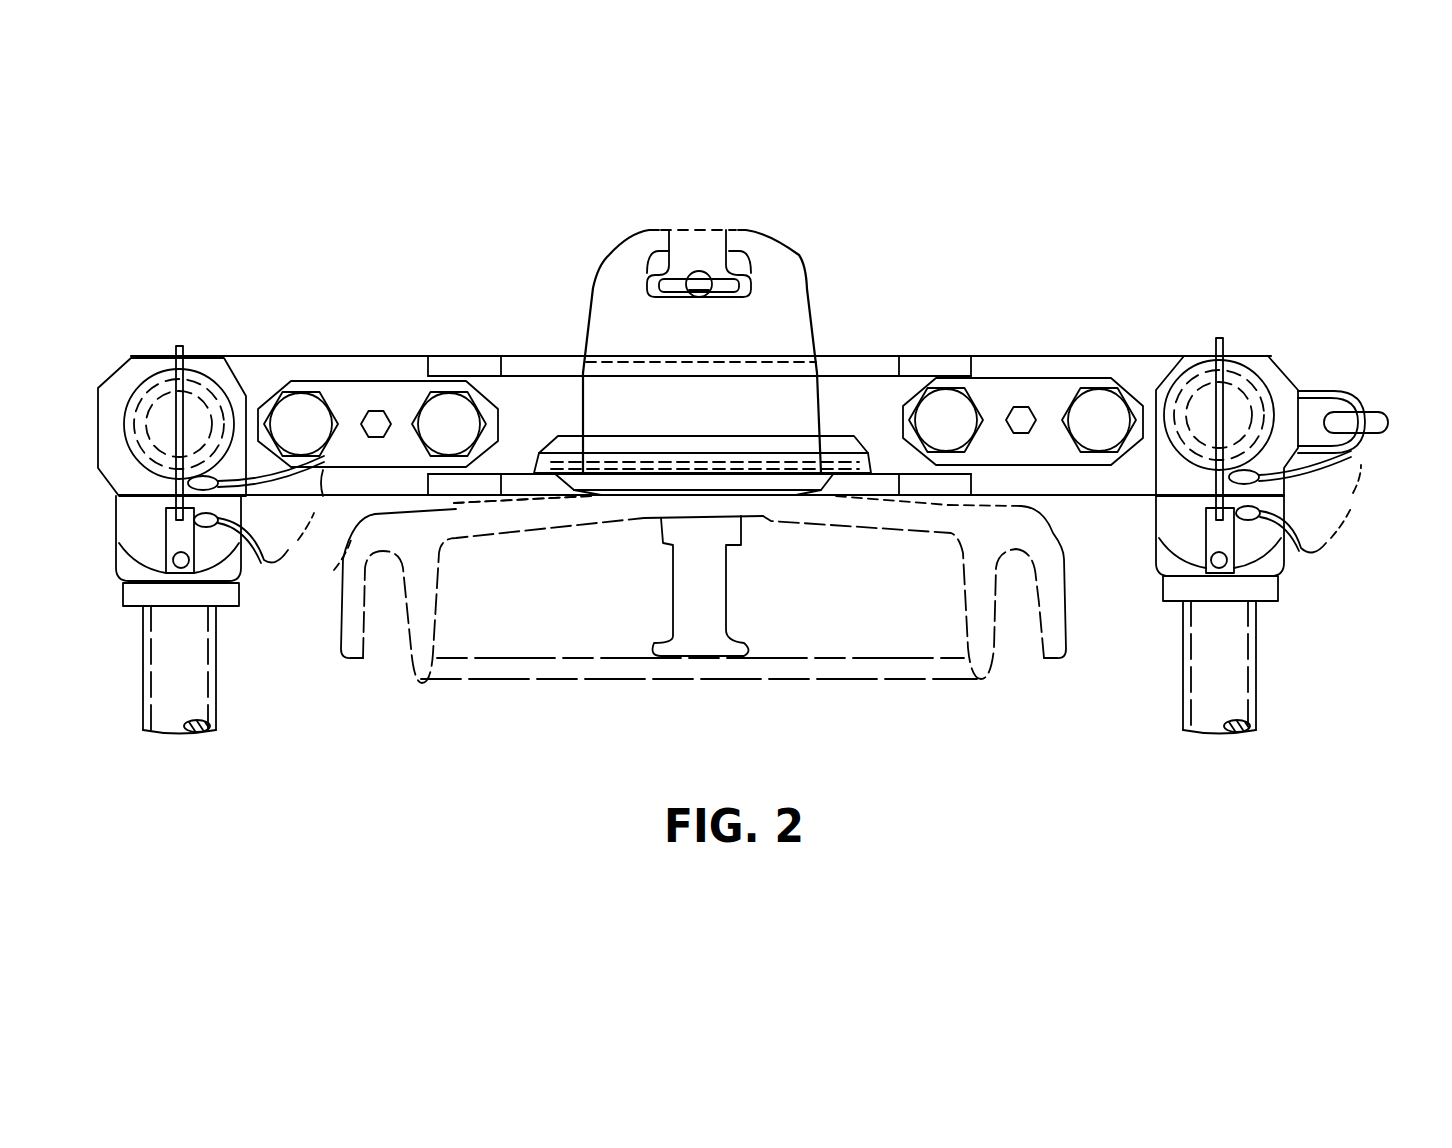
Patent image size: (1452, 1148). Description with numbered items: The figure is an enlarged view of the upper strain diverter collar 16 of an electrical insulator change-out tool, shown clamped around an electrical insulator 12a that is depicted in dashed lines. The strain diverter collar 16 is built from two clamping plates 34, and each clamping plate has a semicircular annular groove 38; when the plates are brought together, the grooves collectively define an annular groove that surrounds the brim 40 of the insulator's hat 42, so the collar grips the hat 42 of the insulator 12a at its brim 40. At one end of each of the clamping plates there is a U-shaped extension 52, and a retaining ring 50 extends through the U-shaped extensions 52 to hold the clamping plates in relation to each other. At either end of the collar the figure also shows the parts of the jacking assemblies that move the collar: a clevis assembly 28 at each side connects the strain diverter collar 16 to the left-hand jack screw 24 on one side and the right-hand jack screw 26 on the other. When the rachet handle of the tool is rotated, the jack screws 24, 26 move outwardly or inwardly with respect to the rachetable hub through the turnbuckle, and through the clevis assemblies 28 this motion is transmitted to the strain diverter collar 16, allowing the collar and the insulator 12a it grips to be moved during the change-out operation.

The electrical insulator 12a is at (412, 680).
The strain diverter collar 16 is at (1060, 336).
The left-hand jack screw 24 is at (155, 652).
The right-hand jack screw 26 is at (1225, 672).
The clevis assembly 28 is at (102, 521).
The clamping plate 34 is at (290, 370).
The semicircular annular groove 38 is at (820, 385).
The brim 40 is at (570, 483).
The hat 42 is at (772, 298).
The retaining ring 50 is at (1372, 418).
The U-shaped extension 52 is at (1305, 400).